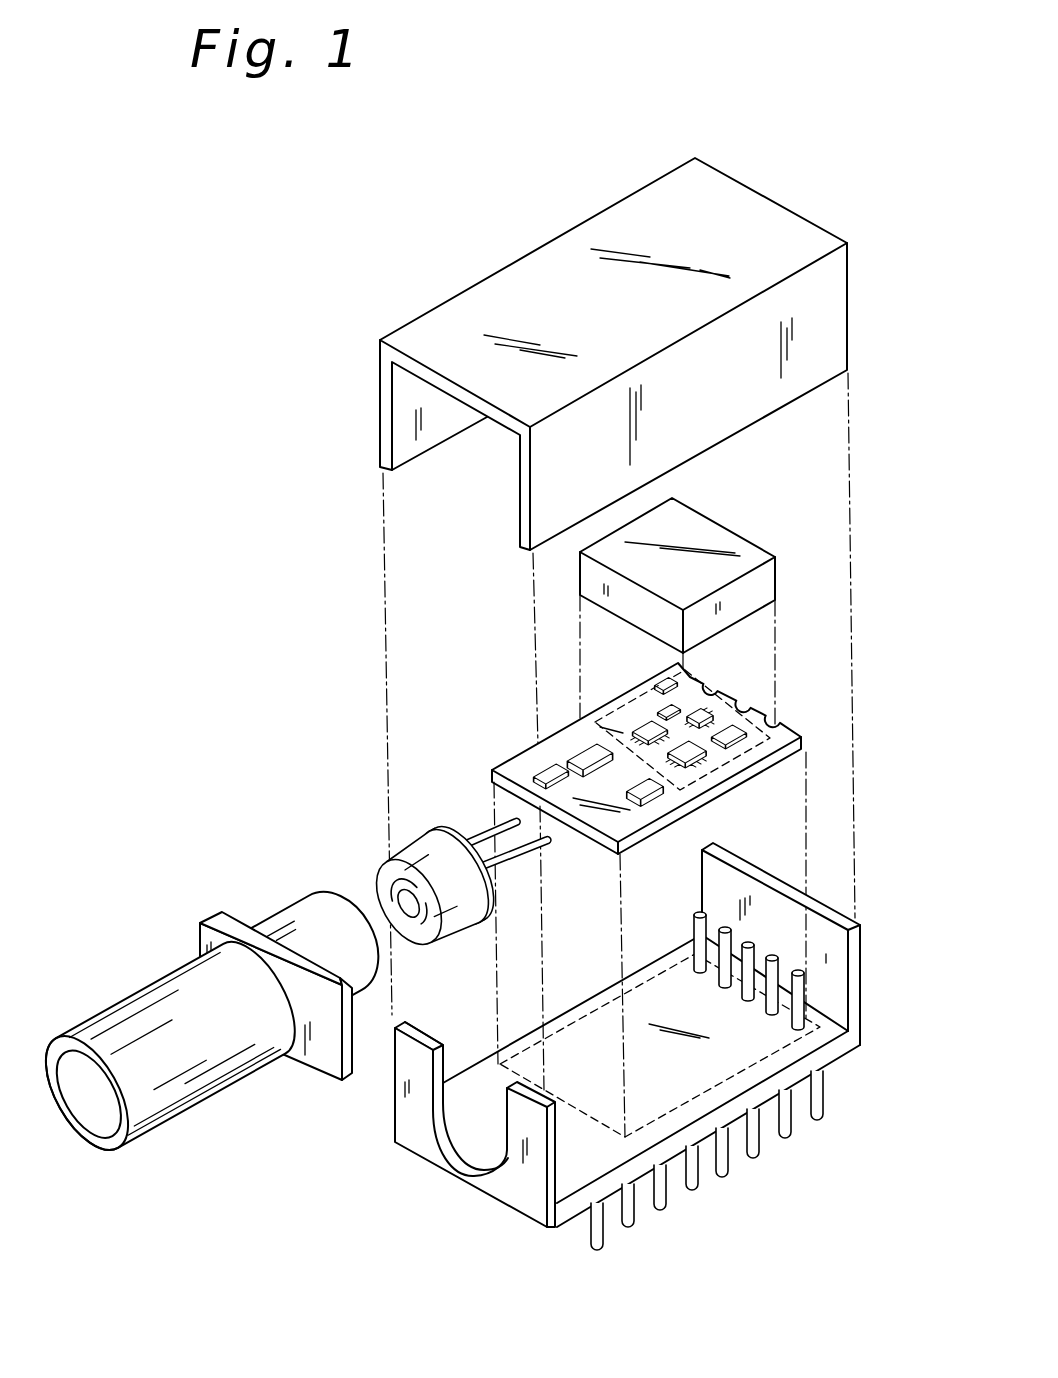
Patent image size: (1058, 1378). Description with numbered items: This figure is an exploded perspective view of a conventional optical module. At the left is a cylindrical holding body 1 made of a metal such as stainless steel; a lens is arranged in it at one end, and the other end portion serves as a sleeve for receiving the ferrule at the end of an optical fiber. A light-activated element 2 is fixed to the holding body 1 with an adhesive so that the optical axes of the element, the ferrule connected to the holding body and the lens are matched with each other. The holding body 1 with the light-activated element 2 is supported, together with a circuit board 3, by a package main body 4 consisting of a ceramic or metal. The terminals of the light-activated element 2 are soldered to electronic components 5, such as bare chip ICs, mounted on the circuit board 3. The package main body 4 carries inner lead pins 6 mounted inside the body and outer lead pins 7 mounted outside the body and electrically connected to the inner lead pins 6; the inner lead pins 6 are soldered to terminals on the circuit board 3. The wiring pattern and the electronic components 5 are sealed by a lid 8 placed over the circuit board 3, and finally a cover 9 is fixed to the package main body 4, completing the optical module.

The holding body 1 is at (204, 1077).
The light-activated element 2 is at (423, 862).
The circuit board 3 is at (773, 726).
The package main body 4 is at (707, 1070).
The electronic components 5 is at (698, 757).
The inner lead pins 6 is at (803, 997).
The outer lead pins 7 is at (820, 1097).
The lid 8 is at (729, 544).
The cover 9 is at (775, 215).